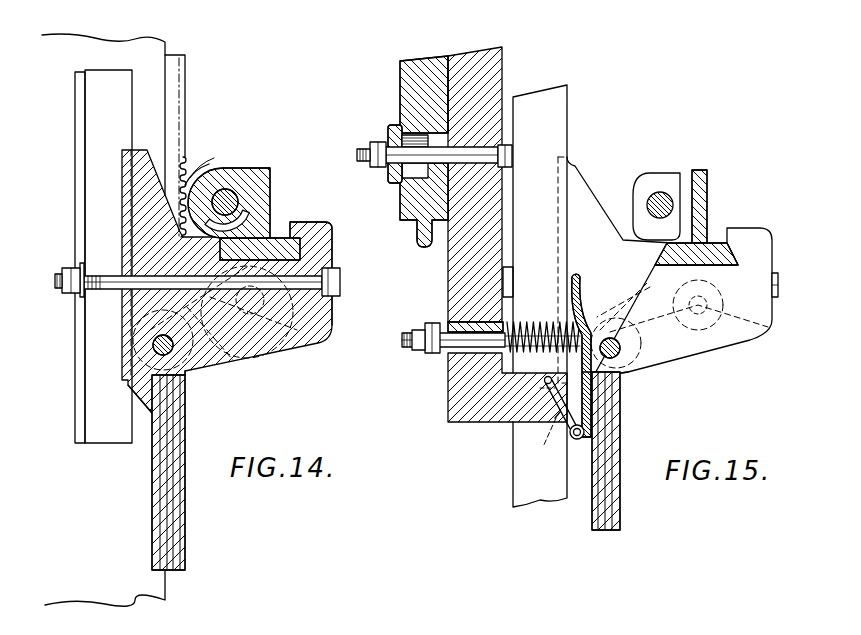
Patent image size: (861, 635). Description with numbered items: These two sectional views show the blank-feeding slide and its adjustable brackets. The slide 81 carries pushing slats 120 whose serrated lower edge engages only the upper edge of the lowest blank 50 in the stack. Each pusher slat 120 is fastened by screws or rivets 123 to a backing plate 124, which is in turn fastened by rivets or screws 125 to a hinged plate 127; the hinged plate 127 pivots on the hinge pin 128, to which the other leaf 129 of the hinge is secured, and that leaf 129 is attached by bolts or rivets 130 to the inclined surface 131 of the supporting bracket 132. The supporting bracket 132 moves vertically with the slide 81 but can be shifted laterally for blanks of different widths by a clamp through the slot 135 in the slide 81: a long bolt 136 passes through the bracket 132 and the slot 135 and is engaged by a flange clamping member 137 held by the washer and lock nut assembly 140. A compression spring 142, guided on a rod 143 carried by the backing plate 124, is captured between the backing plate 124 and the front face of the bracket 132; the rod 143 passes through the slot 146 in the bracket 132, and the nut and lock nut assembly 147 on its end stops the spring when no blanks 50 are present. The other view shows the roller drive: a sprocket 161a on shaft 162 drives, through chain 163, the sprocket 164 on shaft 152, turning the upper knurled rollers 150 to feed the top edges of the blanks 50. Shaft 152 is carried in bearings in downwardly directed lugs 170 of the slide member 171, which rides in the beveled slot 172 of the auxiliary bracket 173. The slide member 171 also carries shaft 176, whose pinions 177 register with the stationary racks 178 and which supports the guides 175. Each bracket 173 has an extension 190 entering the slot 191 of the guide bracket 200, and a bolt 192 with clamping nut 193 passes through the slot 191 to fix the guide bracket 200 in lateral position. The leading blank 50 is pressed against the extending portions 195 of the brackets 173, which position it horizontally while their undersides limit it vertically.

In FIG. 14, the blank 50 is at (185, 455).
In FIG. 15, the blank 50 is at (618, 496).
In FIG. 15, the slide 81 is at (400, 73).
In FIG. 15, the pushing slat 120 is at (592, 297).
In FIG. 15, the screws or rivets 123 is at (627, 377).
In FIG. 15, the backing plate 124 is at (583, 395).
In FIG. 15, the rivets or screws 125 is at (552, 432).
In FIG. 15, the hinged plate 127 is at (555, 418).
In FIG. 15, the hinge pin 128 is at (585, 432).
In FIG. 15, the leaf 129 is at (548, 392).
In FIG. 15, the bolts or rivets 130 is at (537, 391).
In FIG. 15, the inclined surface 131 is at (549, 376).
In FIG. 15, the supporting bracket 132 is at (448, 258).
In FIG. 15, the slot 135 is at (415, 173).
In FIG. 15, the long bolt 136 is at (482, 153).
In FIG. 15, the flange clamping member 137 is at (392, 178).
In FIG. 15, the washer and lock nut assembly 140 is at (372, 145).
In FIG. 15, the compression spring 142 is at (530, 327).
In FIG. 15, the rod 143 is at (443, 353).
In FIG. 15, the slot 146 is at (477, 325).
In FIG. 15, the nut and lock nut assembly 147 is at (412, 350).
In FIG. 14, the upper knurled roller 150 is at (122, 333).
In FIG. 15, the upper knurled roller 150 is at (680, 363).
In FIG. 14, the shaft 152 is at (153, 346).
In FIG. 15, the shaft 152 is at (615, 345).
In FIG. 14, the sprocket 161a is at (282, 330).
In FIG. 14, the shaft 162 is at (326, 331).
In FIG. 15, the shaft 162 is at (763, 326).
In FIG. 14, the chain 163 is at (230, 350).
In FIG. 14, the sprocket 164 is at (202, 366).
In FIG. 14, the downwardly directed lug 170 is at (272, 358).
In FIG. 15, the downwardly directed lug 170 is at (648, 285).
In FIG. 14, the slide member 171 is at (272, 238).
In FIG. 15, the slide member 171 is at (712, 243).
In FIG. 14, the beveled slot 172 is at (293, 222).
In FIG. 14, the auxiliary bracket 173 is at (331, 312).
In FIG. 15, the auxiliary bracket 173 is at (753, 340).
In FIG. 14, the guide 175 is at (240, 190).
In FIG. 14, the shaft 176 is at (235, 173).
In FIG. 15, the shaft 176 is at (663, 195).
In FIG. 14, the pinion 177 is at (226, 197).
In FIG. 14, the stationary rack 178 is at (187, 123).
In FIG. 14, the extension 190 is at (122, 230).
In FIG. 14, the slot 191 is at (98, 148).
In FIG. 14, the bolt 192 is at (112, 274).
In FIG. 14, the clamping nut 193 is at (72, 268).
In FIG. 14, the extending portion 195 is at (147, 397).
In FIG. 14, the guide bracket 200 is at (82, 101).